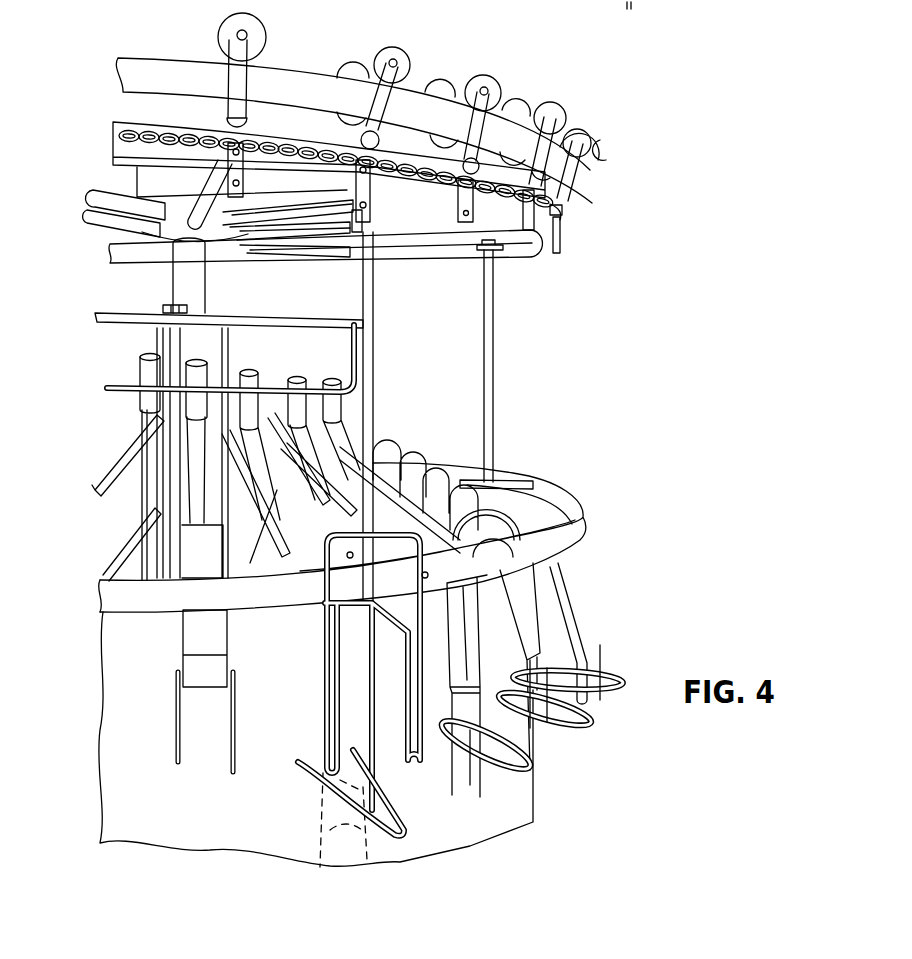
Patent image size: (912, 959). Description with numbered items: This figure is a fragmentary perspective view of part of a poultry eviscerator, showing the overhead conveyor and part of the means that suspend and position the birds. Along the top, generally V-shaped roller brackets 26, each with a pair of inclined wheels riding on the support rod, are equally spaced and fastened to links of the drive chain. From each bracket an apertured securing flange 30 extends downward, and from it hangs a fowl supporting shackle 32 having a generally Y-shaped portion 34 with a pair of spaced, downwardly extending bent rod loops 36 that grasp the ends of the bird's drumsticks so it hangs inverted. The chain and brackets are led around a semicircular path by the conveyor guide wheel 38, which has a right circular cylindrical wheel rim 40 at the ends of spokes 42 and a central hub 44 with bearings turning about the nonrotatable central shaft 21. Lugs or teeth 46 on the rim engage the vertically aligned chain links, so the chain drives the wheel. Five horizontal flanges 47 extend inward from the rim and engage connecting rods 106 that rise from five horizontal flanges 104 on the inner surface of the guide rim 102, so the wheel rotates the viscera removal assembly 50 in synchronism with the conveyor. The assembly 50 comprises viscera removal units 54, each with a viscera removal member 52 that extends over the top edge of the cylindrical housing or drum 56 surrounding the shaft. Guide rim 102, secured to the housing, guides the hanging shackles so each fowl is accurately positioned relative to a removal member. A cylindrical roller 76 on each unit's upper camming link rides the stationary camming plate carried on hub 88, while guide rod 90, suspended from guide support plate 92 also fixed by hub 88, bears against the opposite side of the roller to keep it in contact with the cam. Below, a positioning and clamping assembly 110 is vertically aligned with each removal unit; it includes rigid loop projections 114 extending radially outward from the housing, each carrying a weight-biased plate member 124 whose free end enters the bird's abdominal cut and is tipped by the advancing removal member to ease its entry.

The nonrotatable central shaft 21 is at (180, 280).
The roller brackets 26 is at (237, 45).
The securing flange 30 is at (355, 190).
The fowl supporting shackle 32 is at (322, 638).
The Y-shaped portion 34 is at (473, 595).
The bent rod loops 36 is at (387, 684).
The conveyor guide wheel 38 is at (190, 231).
The wheel rim 40 is at (413, 258).
The spokes 42 is at (333, 240).
The central hub 44 is at (212, 232).
The lugs or teeth 46 is at (397, 167).
The horizontal flanges 47 is at (505, 252).
The viscera removal assembly 50 is at (503, 403).
The viscera removal member 52 is at (190, 632).
The viscera removal units 54 is at (117, 560).
The housing or drum 56 is at (159, 812).
The cylindrical roller 76 is at (140, 395).
The hub 88 is at (160, 338).
The guide rod 90 is at (305, 410).
The guide support plate 92 is at (332, 302).
The guide rim 102 is at (568, 500).
The horizontal flanges 104 is at (520, 480).
The connecting rods 106 is at (375, 328).
The positioning and clamping assembly 110 is at (636, 810).
The loop projections 114 is at (615, 692).
The plate member 124 is at (605, 678).